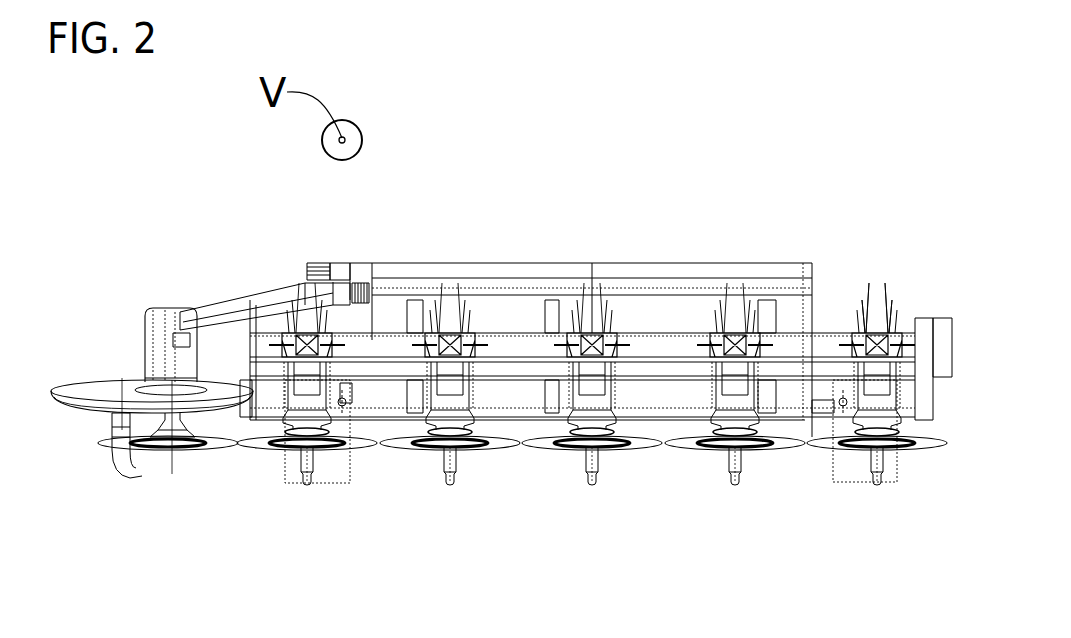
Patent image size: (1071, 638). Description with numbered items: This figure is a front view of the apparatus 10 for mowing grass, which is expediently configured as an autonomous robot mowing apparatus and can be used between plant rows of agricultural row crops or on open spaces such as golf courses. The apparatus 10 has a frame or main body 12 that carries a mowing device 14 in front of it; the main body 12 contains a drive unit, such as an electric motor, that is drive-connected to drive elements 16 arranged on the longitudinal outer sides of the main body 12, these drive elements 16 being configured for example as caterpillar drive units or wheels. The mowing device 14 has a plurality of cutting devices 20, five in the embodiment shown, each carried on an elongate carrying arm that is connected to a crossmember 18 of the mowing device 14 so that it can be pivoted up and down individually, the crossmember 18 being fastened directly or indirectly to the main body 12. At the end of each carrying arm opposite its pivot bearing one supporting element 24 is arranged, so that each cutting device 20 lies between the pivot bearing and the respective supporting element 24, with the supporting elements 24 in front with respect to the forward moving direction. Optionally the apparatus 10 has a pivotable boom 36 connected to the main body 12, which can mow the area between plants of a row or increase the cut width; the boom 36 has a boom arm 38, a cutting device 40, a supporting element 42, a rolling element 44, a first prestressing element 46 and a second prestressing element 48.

The apparatus for mowing grass 10 is at (513, 111).
The main body 12 is at (563, 267).
The mowing device 14 is at (838, 312).
The drive elements 16 is at (292, 472).
The crossmember 18 is at (660, 340).
The cutting devices 20 is at (332, 447).
The supporting element 24 is at (307, 477).
The boom 36 is at (157, 284).
The boom arm 38 is at (212, 310).
The cutting device 40 is at (200, 445).
The supporting element 42 is at (125, 472).
The rolling element 44 is at (130, 380).
The first prestressing element 46 is at (328, 262).
The second prestressing element 48 is at (365, 287).